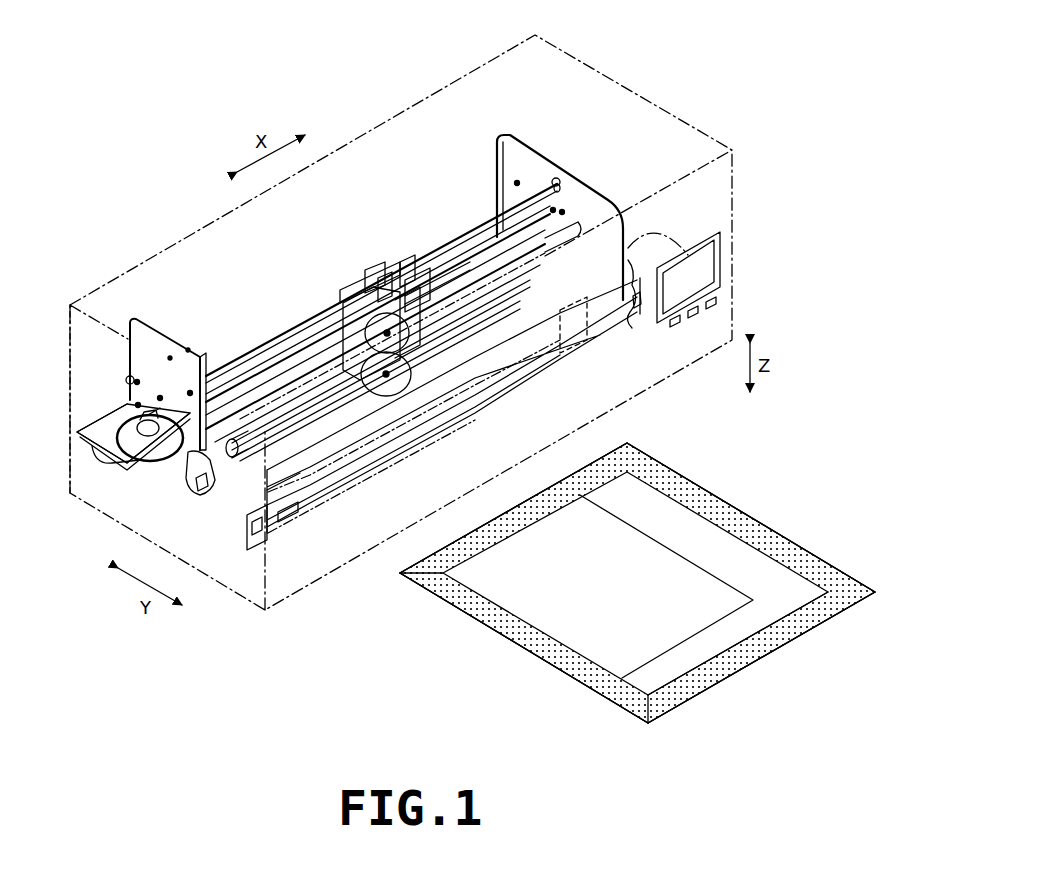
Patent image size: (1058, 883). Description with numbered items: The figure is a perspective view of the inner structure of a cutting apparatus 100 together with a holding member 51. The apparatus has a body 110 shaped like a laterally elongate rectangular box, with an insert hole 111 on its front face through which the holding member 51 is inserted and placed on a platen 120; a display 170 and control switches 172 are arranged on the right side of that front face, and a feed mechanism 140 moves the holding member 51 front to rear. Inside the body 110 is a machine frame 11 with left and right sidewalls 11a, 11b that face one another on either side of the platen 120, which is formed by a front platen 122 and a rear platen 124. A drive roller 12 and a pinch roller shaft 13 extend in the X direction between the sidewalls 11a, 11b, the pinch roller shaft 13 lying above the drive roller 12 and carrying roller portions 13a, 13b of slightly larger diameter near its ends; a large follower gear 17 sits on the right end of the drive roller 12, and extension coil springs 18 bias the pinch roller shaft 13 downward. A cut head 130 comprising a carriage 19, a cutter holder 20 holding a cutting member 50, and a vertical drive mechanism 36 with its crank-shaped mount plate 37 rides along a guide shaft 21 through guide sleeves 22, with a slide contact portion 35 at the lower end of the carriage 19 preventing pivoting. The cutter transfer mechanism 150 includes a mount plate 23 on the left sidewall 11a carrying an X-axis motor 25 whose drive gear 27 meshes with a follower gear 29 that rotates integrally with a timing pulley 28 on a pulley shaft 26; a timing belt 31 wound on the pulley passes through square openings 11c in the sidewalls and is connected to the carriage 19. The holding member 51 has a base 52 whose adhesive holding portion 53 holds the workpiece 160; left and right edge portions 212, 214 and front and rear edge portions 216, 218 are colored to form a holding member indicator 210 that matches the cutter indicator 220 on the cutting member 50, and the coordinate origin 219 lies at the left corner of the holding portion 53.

The cutting apparatus 100 is at (655, 62).
The body 110 is at (680, 128).
The machine frame 11 is at (268, 540).
The left sidewall 11a is at (143, 325).
The right sidewall 11b is at (590, 195).
The square opening 11c is at (160, 410).
The drive roller 12 is at (323, 402).
The pinch roller shaft 13 is at (302, 352).
The roller portion 13a is at (330, 460).
The roller portion 13b is at (548, 262).
The follower gear 17 is at (638, 294).
The extension coil spring 18 is at (196, 492).
The carriage 19 is at (416, 275).
The cutter holder 20 is at (428, 295).
The guide shaft 21 is at (452, 240).
The guide sleeve 22 is at (392, 262).
The mount plate 23 is at (72, 452).
The X-axis motor 25 is at (104, 460).
The pulley shaft 26 is at (140, 369).
The drive gear 27 is at (110, 418).
The timing pulley 28 is at (162, 462).
The follower gear 29 is at (150, 462).
The timing belt 31 is at (275, 365).
The slide contact portion 35 is at (340, 330).
The vertical drive mechanism 36 is at (408, 360).
The mount plate 37 is at (385, 400).
The cutting member 50 is at (415, 332).
The holding member 51 is at (798, 645).
The base 52 is at (760, 643).
The holding portion 53 is at (725, 655).
The insert hole 111 is at (298, 525).
The platen 120 is at (530, 340).
The front platen 122 is at (318, 448).
The rear platen 124 is at (495, 228).
The cut head 130 is at (330, 275).
The feed mechanism 140 is at (648, 220).
The cutter transfer mechanism 150 is at (118, 383).
The workpiece 160 is at (558, 620).
The display 170 is at (702, 268).
The control switches 172 is at (710, 306).
The holding member indicator 210 is at (790, 622).
The left edge portion 212 is at (478, 612).
The right edge portion 214 is at (740, 500).
The front edge portion 216 is at (528, 507).
The rear edge portion 218 is at (710, 676).
The origin 219 is at (425, 588).
The cutter indicator 220 is at (380, 295).